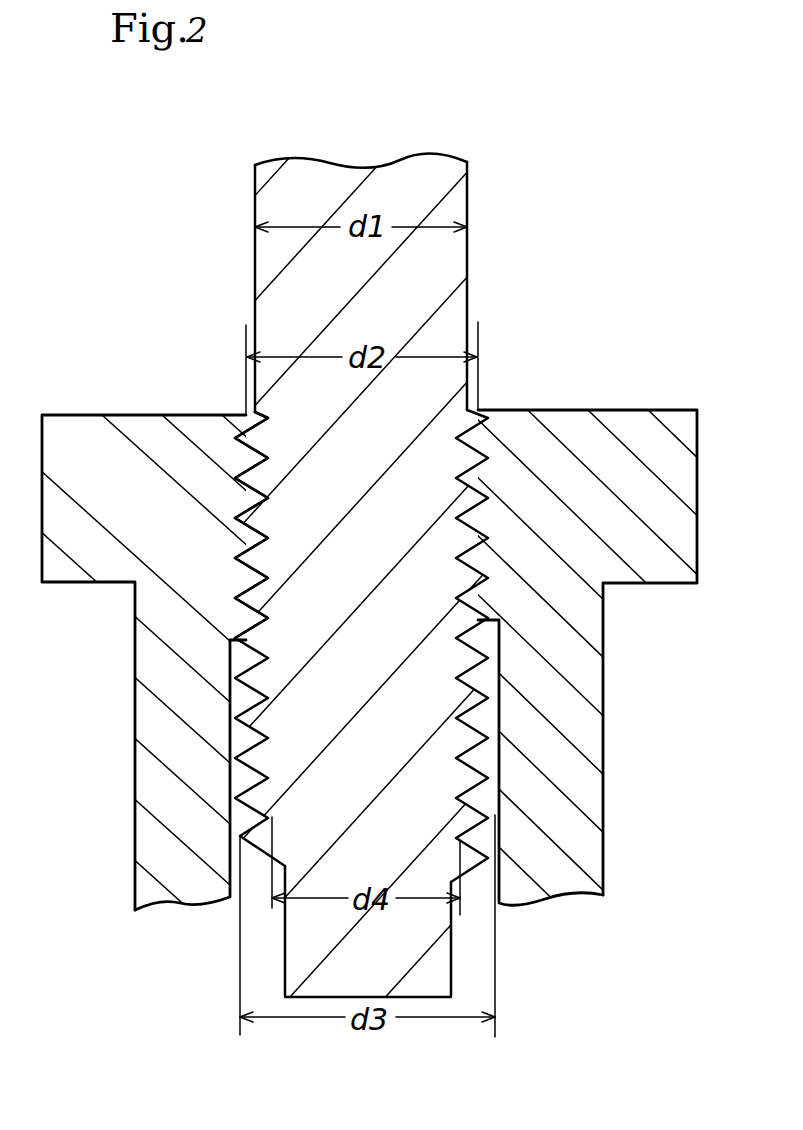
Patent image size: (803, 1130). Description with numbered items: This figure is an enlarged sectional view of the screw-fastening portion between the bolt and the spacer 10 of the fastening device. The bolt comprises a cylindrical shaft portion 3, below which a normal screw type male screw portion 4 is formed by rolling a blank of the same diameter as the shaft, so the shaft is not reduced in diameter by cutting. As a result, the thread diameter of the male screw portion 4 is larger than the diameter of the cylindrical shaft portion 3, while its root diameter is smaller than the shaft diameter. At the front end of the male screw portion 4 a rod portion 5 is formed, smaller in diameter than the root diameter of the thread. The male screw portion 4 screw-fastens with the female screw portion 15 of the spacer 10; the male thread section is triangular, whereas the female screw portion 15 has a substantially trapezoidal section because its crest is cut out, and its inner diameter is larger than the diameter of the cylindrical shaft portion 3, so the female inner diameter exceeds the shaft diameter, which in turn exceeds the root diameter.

The cylindrical shaft portion 3 is at (457, 262).
The male screw portion 4 is at (476, 460).
The female screw portion 15 is at (237, 598).
The spacer 10 is at (582, 677).
The rod portion 5 is at (432, 962).